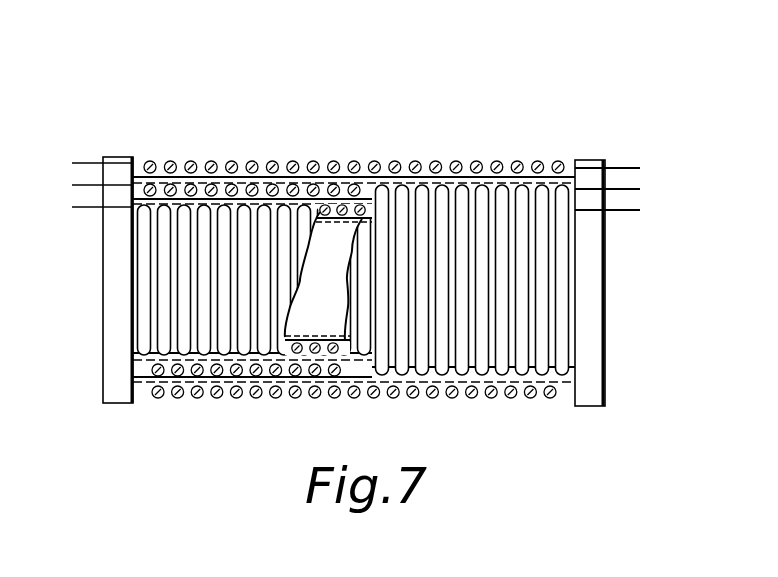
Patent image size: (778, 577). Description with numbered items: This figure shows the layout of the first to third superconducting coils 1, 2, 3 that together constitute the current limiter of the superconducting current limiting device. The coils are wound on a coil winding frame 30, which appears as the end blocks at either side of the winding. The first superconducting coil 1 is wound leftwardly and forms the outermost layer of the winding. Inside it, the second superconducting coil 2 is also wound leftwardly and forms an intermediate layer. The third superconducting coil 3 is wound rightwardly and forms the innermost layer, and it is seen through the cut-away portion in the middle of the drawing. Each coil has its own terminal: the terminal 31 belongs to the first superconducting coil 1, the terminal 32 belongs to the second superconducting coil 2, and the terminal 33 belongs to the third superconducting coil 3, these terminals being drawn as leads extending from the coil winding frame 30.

The first superconducting coil 1 is at (170, 163).
The second superconducting coil 2 is at (222, 176).
The third superconducting coil 3 is at (297, 198).
The coil winding frame 30 is at (590, 407).
The terminal of first superconducting coil 31 is at (627, 166).
The terminal of second superconducting coil 32 is at (628, 187).
The terminal of third superconducting coil 33 is at (630, 208).